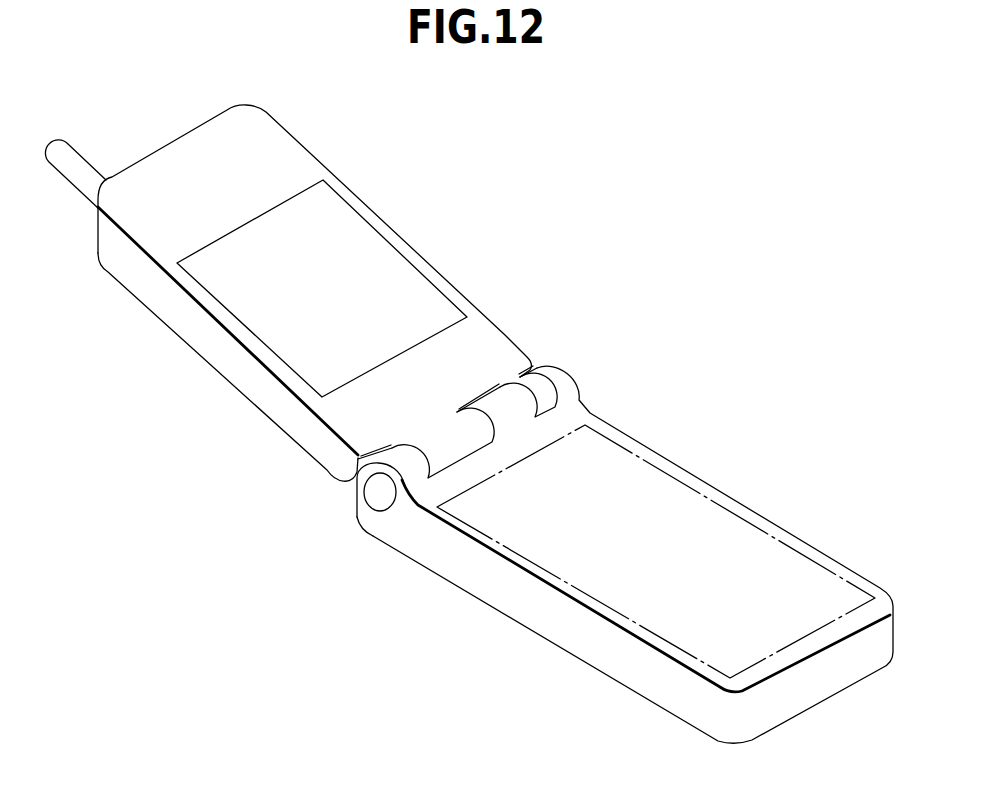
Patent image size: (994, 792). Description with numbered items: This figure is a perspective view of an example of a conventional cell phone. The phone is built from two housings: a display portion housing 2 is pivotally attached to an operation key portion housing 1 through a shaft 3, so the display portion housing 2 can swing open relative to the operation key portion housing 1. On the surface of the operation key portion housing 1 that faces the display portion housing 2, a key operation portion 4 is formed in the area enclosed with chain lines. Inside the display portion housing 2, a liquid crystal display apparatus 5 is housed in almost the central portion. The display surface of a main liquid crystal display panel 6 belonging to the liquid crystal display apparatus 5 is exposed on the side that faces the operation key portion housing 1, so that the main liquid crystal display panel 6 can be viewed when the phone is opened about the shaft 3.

The operation key portion housing 1 is at (553, 625).
The display portion housing 2 is at (207, 347).
The shaft 3 is at (378, 495).
The key operation portion 4 is at (685, 515).
The liquid crystal display apparatus 5 is at (363, 260).
The main liquid crystal display panel 6 is at (413, 295).